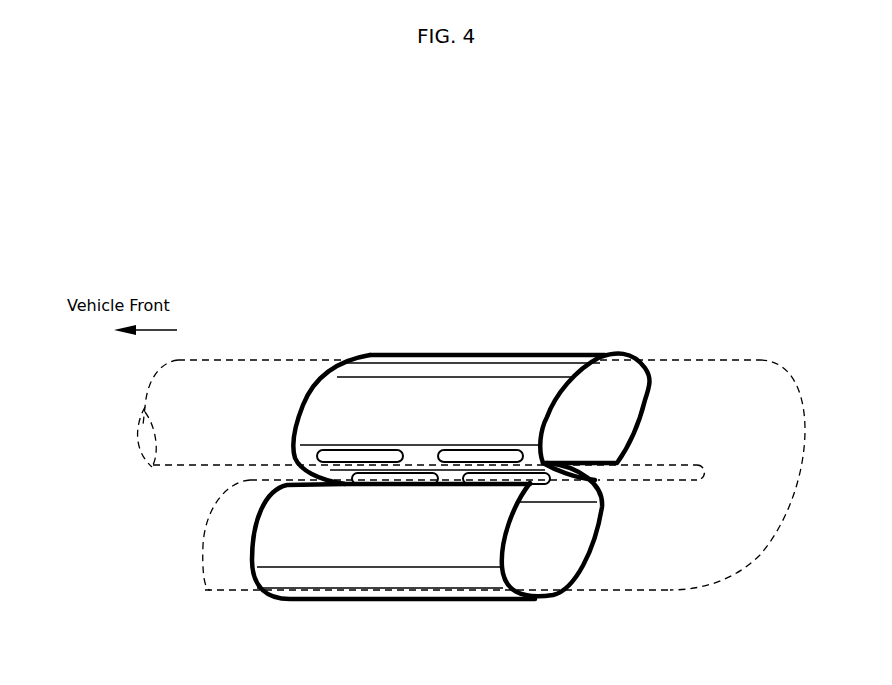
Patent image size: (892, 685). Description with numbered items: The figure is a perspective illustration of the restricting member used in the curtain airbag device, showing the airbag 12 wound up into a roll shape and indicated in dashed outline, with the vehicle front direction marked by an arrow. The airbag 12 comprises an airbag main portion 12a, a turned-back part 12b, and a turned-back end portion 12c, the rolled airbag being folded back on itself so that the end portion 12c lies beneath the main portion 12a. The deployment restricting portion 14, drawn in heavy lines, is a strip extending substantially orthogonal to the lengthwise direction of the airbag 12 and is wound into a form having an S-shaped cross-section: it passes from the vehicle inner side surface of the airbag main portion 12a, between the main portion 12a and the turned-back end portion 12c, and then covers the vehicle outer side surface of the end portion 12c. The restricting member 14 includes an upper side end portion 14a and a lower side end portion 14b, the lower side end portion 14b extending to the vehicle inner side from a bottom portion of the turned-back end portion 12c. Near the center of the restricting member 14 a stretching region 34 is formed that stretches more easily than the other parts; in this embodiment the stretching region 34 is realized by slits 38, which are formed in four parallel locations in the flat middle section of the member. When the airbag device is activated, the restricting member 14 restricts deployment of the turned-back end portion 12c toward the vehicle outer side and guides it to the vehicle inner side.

The airbag 12 is at (220, 352).
The airbag main portion 12a is at (290, 375).
The turned-back part of the airbag 12b is at (747, 557).
The turned-back end portion 12c is at (234, 575).
The deployment restricting portion 14 is at (577, 342).
The upper side end portion 14a is at (603, 467).
The lower side end portion 14b is at (457, 485).
The stretching region 34 is at (433, 400).
The slits 38 is at (368, 450).